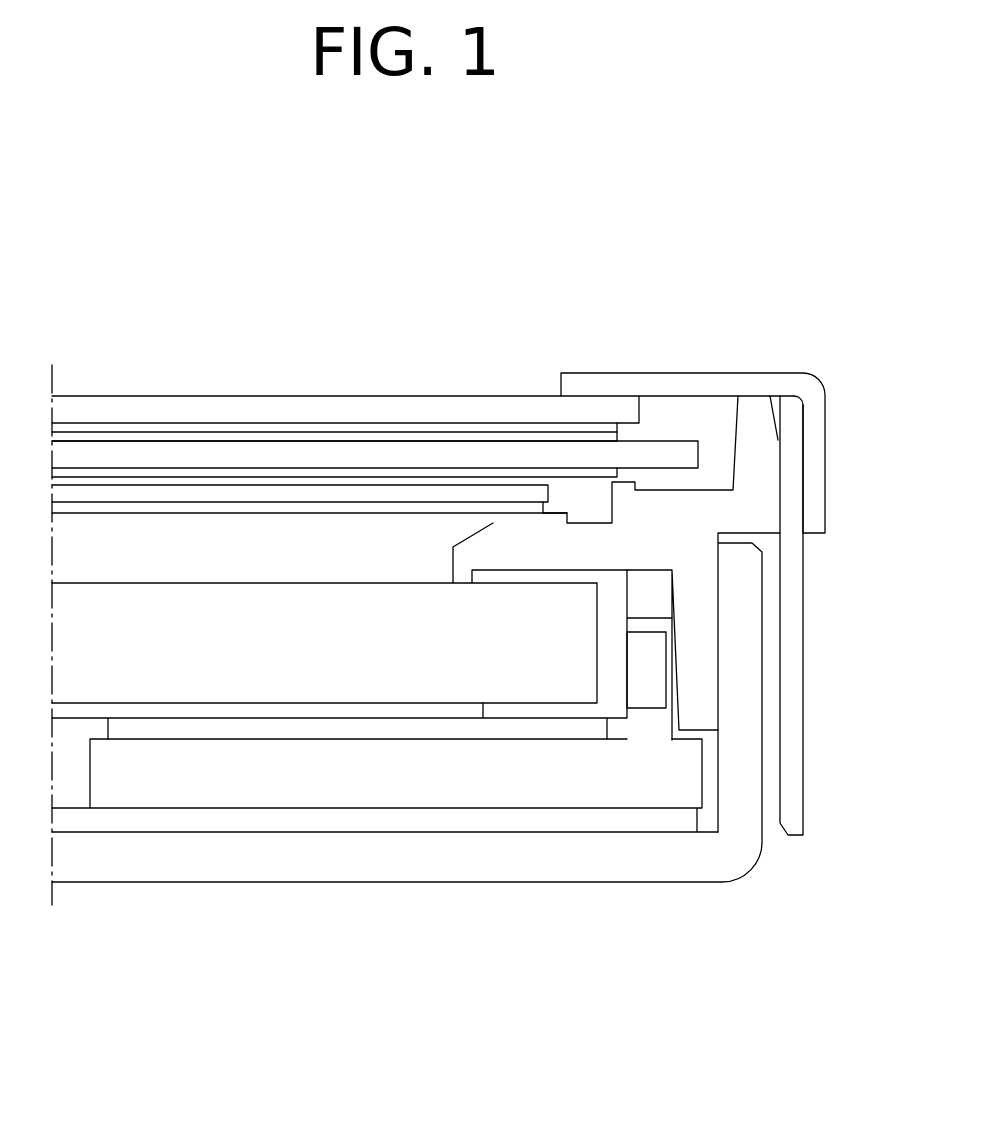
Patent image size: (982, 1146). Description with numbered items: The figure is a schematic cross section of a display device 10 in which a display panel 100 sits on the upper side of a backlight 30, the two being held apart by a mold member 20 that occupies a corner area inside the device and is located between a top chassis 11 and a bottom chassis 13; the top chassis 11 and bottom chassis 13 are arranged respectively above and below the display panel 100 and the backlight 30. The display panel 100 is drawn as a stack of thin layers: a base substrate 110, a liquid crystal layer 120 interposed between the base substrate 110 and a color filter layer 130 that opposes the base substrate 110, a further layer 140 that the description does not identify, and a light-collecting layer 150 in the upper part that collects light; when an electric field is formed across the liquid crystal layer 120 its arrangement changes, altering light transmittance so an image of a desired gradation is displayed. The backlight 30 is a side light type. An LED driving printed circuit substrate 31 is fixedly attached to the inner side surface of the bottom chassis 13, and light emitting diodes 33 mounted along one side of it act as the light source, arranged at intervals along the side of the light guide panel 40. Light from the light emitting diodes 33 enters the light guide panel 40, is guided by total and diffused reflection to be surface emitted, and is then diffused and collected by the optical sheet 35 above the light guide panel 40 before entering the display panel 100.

The display device 10 is at (387, 175).
The top chassis 11 is at (689, 372).
The bottom chassis 13 is at (700, 863).
The mold member 20 is at (757, 486).
The backlight 30 is at (647, 938).
The LED driving printed circuit substrate 31 is at (287, 795).
The light emitting diodes 33 is at (652, 693).
The optical sheet 35 is at (342, 735).
The light guide panel 40 is at (207, 690).
The display panel 100 is at (380, 332).
The base substrate 110 is at (172, 470).
The liquid crystal layer 120 is at (222, 453).
The color filter layer 130 is at (275, 437).
The fourth layer 140 is at (328, 427).
The light-collecting layer 150 is at (378, 397).